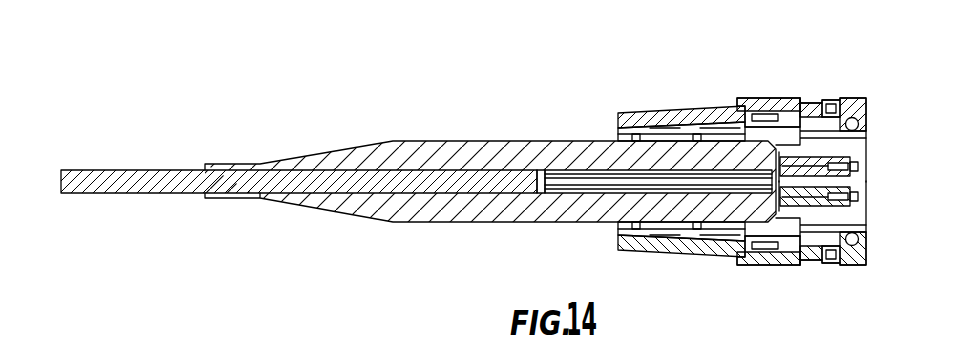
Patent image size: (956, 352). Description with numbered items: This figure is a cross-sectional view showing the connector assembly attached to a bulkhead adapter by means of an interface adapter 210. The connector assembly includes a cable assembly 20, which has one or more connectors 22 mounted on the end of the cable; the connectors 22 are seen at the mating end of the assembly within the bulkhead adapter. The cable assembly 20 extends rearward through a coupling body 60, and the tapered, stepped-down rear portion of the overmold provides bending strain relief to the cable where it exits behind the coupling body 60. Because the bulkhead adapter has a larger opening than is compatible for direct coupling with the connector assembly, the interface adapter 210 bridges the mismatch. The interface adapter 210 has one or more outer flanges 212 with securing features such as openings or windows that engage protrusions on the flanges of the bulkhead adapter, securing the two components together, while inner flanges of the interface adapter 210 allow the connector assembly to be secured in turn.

The cable assembly 20 is at (518, 209).
The coupling body 60 is at (627, 113).
The interface adapter 210 is at (766, 98).
The outer flange 212 is at (752, 265).
The connector 22 is at (850, 158).